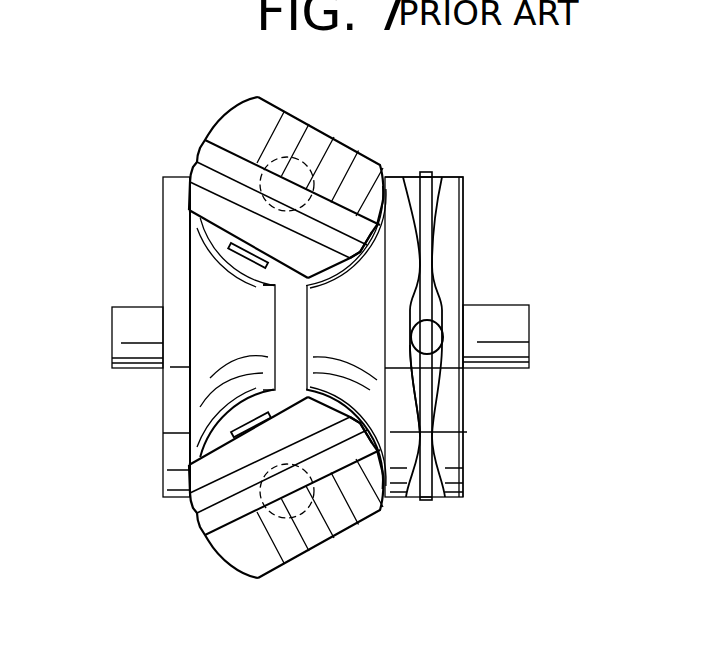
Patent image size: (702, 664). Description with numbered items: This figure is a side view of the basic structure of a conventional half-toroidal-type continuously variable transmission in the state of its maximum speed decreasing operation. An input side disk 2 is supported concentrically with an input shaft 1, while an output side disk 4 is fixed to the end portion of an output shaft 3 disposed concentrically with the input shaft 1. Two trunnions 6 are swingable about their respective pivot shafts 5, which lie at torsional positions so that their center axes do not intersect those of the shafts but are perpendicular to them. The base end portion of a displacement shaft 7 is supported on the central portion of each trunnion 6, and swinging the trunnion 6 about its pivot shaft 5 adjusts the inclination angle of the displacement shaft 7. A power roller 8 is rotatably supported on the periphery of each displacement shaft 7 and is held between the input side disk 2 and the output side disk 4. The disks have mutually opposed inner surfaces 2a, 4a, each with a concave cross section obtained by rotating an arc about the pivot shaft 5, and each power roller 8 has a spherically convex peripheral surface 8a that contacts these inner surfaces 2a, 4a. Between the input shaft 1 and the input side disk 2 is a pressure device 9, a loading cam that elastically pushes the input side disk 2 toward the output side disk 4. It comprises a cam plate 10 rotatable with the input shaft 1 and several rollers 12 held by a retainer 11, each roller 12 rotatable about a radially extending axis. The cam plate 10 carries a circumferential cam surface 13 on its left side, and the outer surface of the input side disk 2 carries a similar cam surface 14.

The input shaft 1 is at (518, 332).
The input side disk 2 is at (402, 207).
The inner surface 2a is at (377, 517).
The output shaft 3 is at (118, 333).
The output side disk 4 is at (173, 220).
The inner surface 4a is at (266, 272).
The pivot shaft 5 is at (312, 157).
The trunnion 6 is at (232, 118).
The displacement shaft 7 is at (233, 260).
The power roller 8 is at (196, 186).
The peripheral surface 8a is at (192, 191).
The pressure device 9 is at (478, 174).
The cam plate 10 is at (455, 223).
The retainer 11 is at (427, 173).
The roller 12 is at (415, 182).
The cam surface 13 is at (437, 272).
The cam surface 14 is at (417, 397).